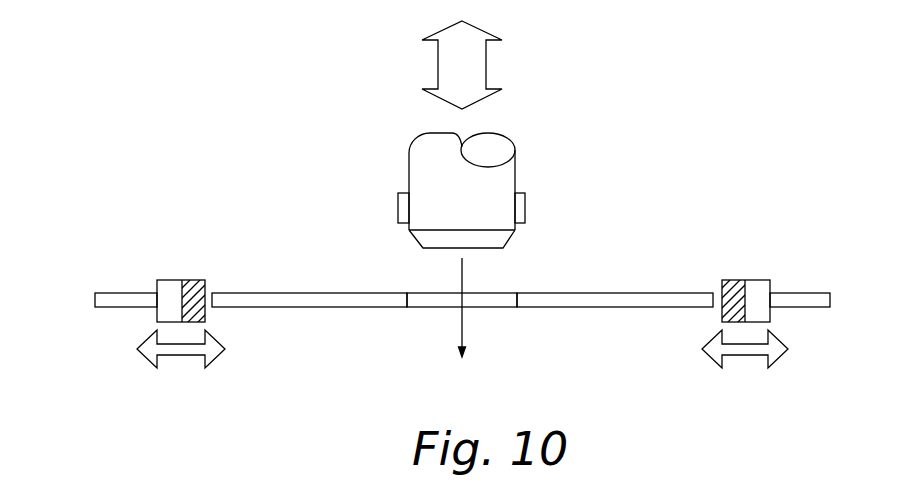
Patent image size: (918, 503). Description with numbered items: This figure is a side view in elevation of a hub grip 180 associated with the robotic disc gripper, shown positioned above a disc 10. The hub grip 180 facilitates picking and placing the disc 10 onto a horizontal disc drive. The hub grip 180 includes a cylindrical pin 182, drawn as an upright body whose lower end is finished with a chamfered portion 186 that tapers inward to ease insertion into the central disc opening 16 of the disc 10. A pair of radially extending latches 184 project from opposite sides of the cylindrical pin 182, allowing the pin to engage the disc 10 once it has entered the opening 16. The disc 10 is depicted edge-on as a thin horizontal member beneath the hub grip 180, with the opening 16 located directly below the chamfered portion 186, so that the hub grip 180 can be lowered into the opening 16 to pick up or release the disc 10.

The disc 10 is at (462, 305).
The opening 16 is at (514, 314).
The hub grip 180 is at (464, 190).
The cylindrical pin 182 is at (408, 163).
The radially extending latches 184 is at (396, 209).
The chamfered portion 186 is at (515, 236).